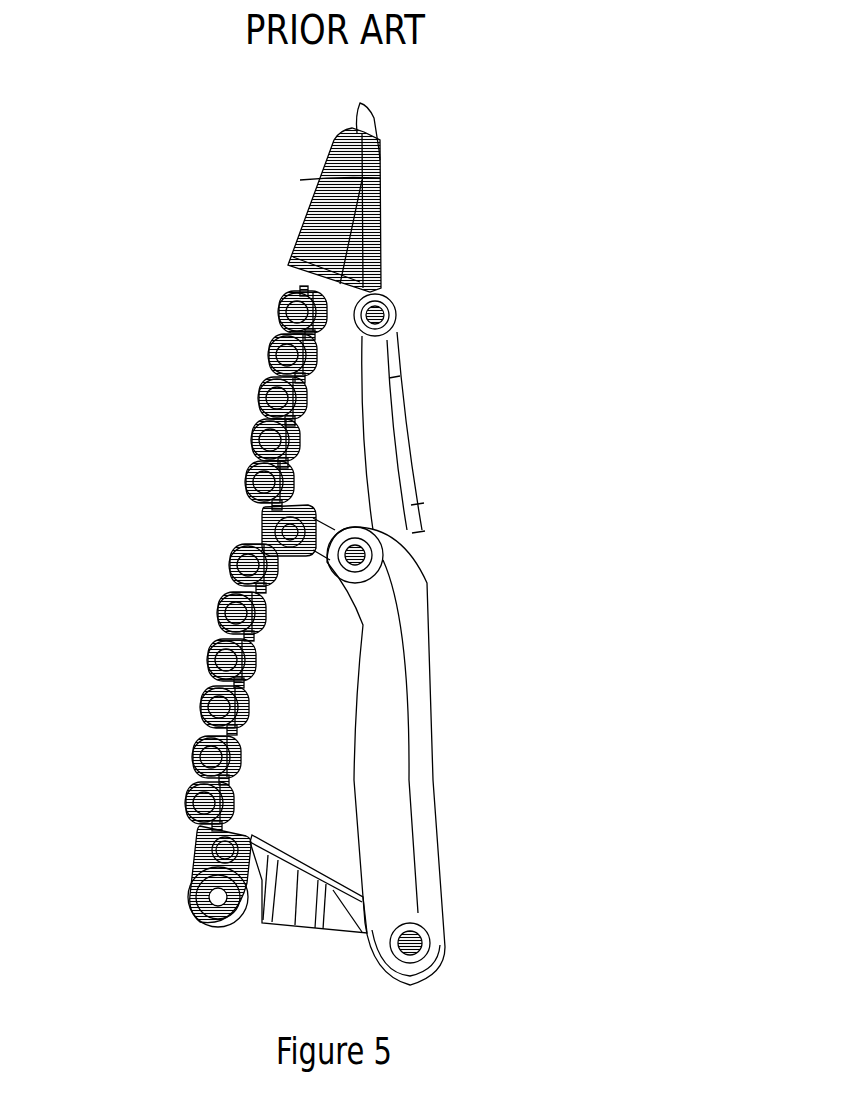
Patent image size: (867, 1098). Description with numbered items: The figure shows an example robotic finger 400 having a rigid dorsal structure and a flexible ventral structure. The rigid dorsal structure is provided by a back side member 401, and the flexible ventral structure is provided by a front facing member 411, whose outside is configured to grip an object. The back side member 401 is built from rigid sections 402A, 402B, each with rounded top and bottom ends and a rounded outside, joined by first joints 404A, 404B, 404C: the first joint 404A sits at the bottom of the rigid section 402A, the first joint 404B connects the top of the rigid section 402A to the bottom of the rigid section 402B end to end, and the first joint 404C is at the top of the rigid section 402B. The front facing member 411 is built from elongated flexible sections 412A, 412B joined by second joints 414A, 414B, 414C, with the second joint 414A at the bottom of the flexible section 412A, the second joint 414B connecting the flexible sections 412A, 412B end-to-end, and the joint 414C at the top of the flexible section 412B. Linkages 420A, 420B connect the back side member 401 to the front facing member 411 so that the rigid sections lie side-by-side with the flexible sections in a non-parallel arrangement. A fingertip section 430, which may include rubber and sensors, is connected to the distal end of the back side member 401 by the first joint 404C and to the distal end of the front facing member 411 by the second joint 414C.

The robotic finger 400 is at (152, 174).
The fingertip section 430 is at (307, 146).
The front facing member 411 is at (124, 508).
The back side member 401 is at (471, 508).
The flexible section 412A is at (195, 650).
The flexible section 412B is at (240, 380).
The second joint 414A is at (221, 843).
The second joint 414B is at (282, 532).
The second joint 414C is at (298, 289).
The linkage 420A is at (282, 908).
The linkage 420B is at (316, 552).
The rigid section 402A is at (417, 717).
The rigid section 402B is at (405, 420).
The first joint 404A is at (414, 936).
The first joint 404B is at (363, 563).
The first joint 404C is at (381, 316).